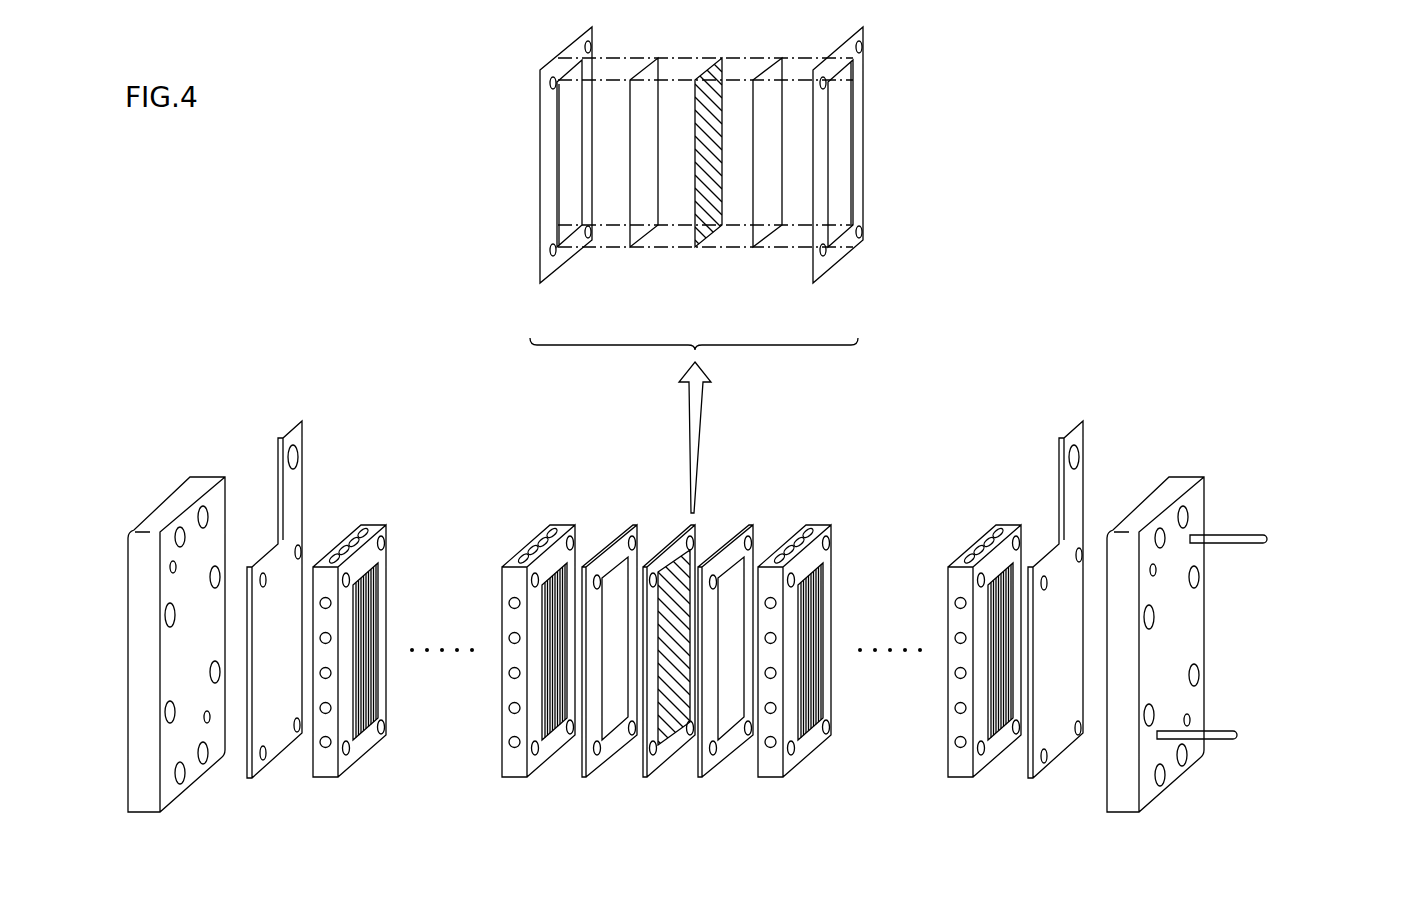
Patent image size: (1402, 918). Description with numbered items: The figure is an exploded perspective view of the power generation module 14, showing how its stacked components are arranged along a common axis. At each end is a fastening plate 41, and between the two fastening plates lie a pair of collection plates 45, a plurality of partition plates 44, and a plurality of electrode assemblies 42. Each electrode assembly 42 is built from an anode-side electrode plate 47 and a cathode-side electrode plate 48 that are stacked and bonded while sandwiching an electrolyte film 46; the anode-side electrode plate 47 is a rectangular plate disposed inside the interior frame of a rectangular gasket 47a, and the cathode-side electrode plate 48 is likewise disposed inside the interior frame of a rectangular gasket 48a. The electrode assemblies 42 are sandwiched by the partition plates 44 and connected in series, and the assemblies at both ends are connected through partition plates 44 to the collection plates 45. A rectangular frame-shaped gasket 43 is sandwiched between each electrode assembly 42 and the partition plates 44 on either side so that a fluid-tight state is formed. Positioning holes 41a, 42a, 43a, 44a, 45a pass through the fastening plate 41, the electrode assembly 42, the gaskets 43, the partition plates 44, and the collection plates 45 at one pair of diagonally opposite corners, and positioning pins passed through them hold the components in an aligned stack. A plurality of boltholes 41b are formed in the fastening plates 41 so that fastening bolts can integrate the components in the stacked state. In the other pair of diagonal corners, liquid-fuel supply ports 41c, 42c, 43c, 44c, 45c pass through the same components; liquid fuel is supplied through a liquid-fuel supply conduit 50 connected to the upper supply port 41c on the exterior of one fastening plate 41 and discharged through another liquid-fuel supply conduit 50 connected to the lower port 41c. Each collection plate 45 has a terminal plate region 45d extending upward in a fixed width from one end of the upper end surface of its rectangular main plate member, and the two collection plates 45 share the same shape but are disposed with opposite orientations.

The power generation module 14 is at (915, 372).
The fastening plate 41 is at (207, 477).
The positioning hole 41a is at (168, 567).
The bolthole 41b is at (1185, 515).
The liquid-fuel supply port 41c is at (1163, 537).
The electrode assembly 42 is at (695, 520).
The positioning hole 42a is at (655, 574).
The liquid-fuel supply port 42c is at (690, 537).
The gasket 43 is at (634, 523).
The positioning hole 43a is at (596, 578).
The liquid-fuel supply port 43c is at (632, 540).
The partition plate 44 is at (548, 527).
The positioning hole 44a is at (347, 573).
The liquid-fuel supply port 44c is at (384, 535).
The collection plate 45 is at (303, 487).
The positioning hole 45a is at (263, 572).
The liquid-fuel supply port 45c is at (300, 550).
The terminal plate region 45d is at (290, 440).
The electrolyte film 46 is at (712, 233).
The anode-side electrode plate 47 is at (768, 217).
The gasket 47a is at (845, 250).
The cathode-side electrode plate 48 is at (645, 208).
The gasket 48a is at (570, 253).
The liquid-fuel supply conduit 50 is at (1269, 539).